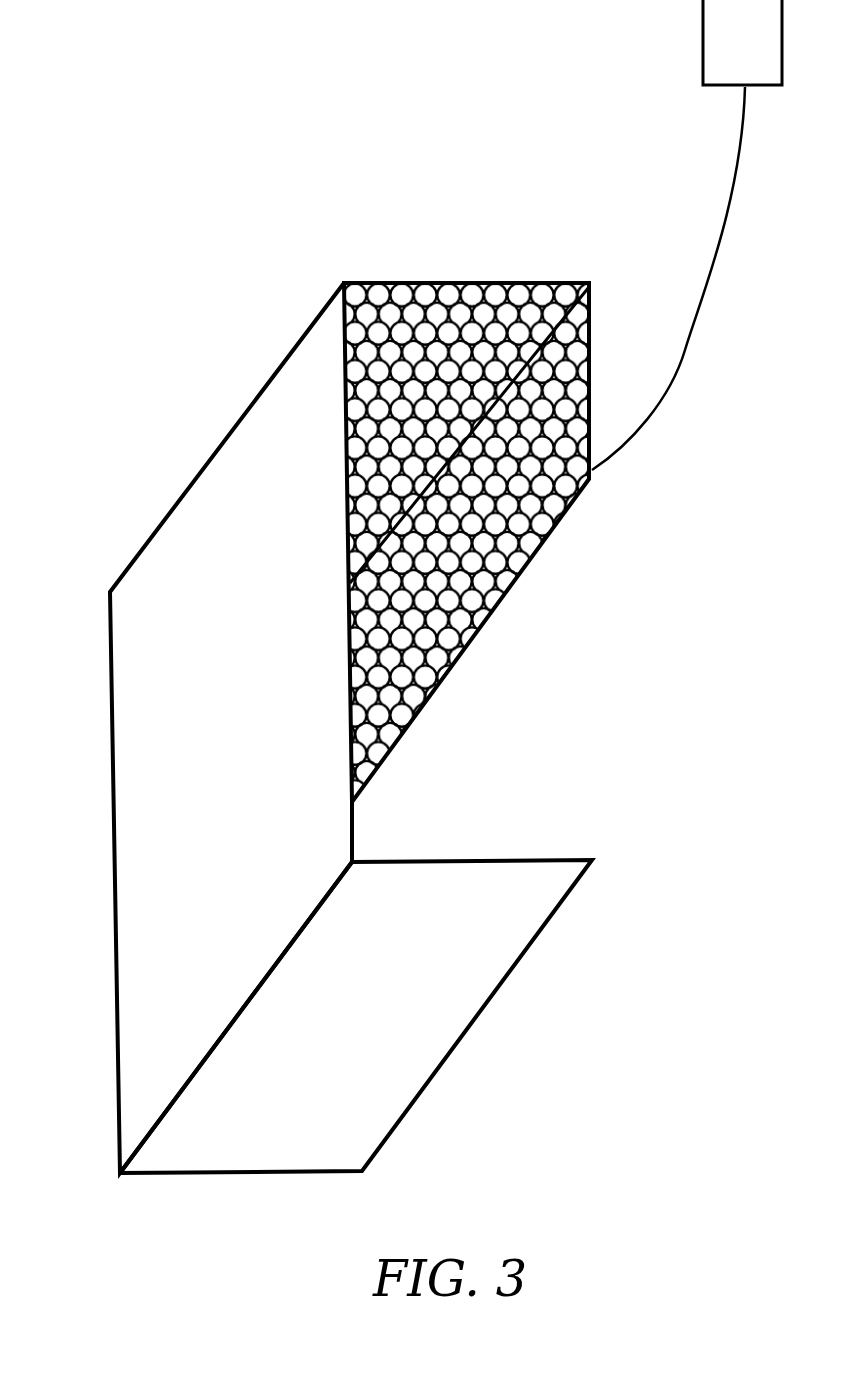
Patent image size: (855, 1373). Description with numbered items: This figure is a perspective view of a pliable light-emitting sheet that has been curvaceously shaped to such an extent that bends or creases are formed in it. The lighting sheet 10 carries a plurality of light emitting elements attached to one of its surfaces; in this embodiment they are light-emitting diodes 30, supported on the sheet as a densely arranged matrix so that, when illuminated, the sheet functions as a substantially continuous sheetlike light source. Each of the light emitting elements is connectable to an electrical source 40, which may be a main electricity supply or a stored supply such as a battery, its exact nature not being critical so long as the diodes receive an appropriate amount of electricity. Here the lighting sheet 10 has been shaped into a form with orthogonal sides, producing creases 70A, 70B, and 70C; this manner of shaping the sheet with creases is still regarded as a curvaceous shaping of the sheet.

The lighting sheet 10 is at (367, 700).
The light-emitting diodes 30 is at (465, 542).
The electrical source 40 is at (758, 40).
The crease 70A is at (356, 1016).
The crease 70B is at (203, 728).
The crease 70C is at (507, 545).